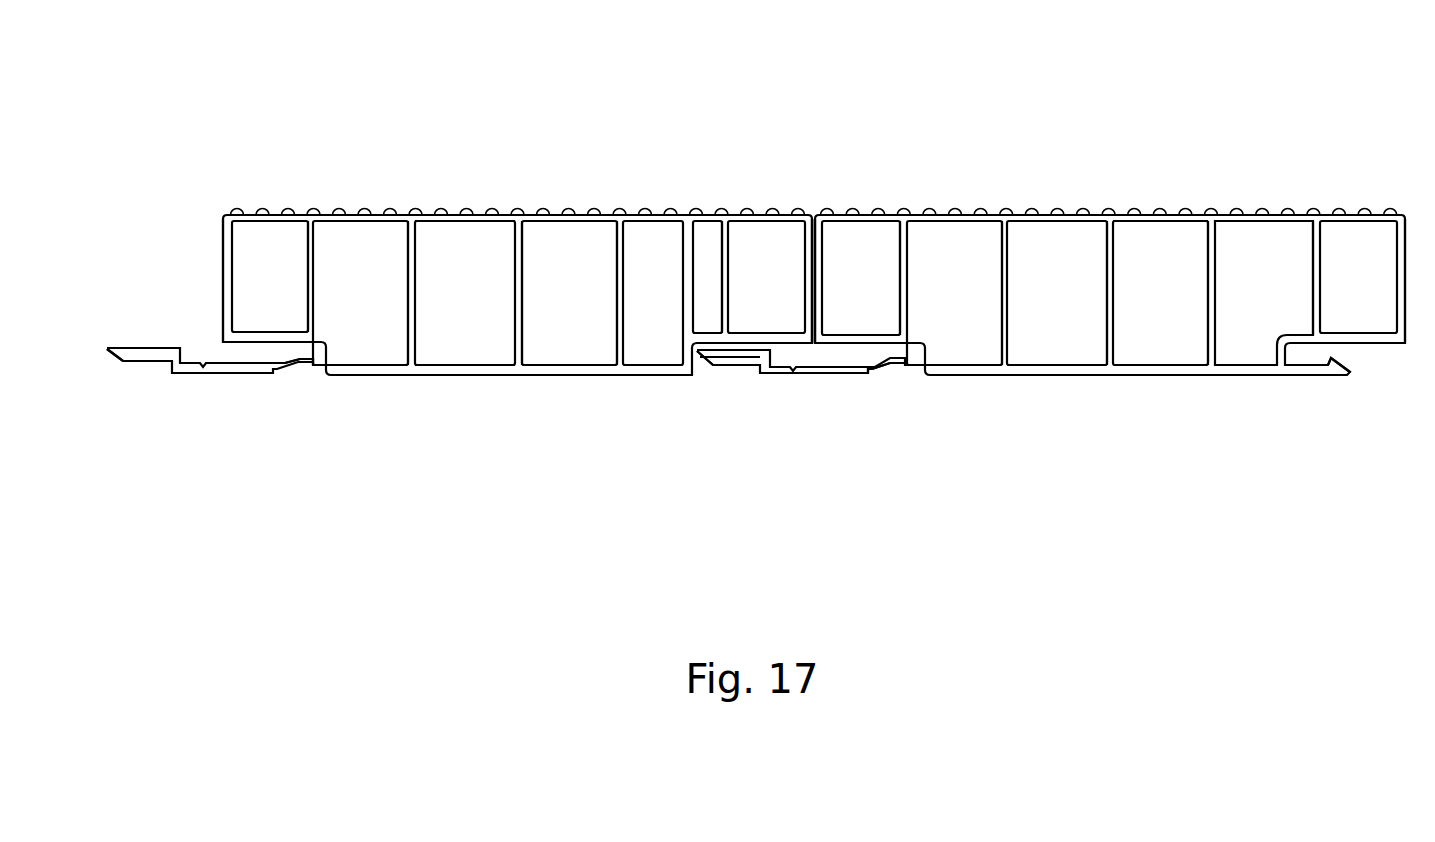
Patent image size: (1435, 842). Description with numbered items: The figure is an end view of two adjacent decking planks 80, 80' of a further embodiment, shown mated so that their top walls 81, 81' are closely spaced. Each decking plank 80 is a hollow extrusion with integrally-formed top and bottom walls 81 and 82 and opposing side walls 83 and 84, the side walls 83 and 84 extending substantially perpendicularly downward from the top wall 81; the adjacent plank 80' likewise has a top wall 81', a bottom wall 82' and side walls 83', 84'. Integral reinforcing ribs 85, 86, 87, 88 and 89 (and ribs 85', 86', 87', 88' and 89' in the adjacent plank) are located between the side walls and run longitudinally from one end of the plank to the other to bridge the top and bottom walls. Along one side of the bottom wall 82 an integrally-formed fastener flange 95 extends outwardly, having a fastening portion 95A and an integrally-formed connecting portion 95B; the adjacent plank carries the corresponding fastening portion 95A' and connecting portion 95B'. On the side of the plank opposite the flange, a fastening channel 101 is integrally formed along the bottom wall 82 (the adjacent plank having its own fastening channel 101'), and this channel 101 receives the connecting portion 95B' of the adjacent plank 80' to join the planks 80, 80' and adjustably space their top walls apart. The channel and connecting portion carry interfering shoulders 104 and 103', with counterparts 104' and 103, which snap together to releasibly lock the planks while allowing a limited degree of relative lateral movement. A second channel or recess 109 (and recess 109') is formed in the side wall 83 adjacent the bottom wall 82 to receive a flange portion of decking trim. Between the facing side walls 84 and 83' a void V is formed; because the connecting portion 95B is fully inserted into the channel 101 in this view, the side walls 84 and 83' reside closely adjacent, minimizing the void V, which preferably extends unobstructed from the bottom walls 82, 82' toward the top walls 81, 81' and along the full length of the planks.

The decking plank 80 is at (500, 245).
The adjacent decking plank 80' is at (1115, 256).
The top wall 81 is at (465, 187).
The top wall 81' is at (1166, 179).
The bottom wall 82 is at (465, 394).
The bottom wall 82' is at (1261, 418).
The side wall 83 is at (203, 267).
The side wall 83' is at (851, 240).
The side wall 84 is at (804, 244).
The side wall 84' is at (1396, 235).
The reinforcing rib 85 is at (273, 238).
The reinforcing rib 85' is at (929, 234).
The reinforcing rib 86 is at (388, 253).
The reinforcing rib 86' is at (1014, 249).
The reinforcing rib 87 is at (545, 321).
The reinforcing rib 87' is at (1110, 335).
The reinforcing rib 88 is at (621, 254).
The reinforcing rib 88' is at (1205, 334).
The reinforcing rib 89 is at (715, 239).
The reinforcing rib 89' is at (1303, 238).
The fastener flange 95 is at (238, 348).
The fastening portion 95A is at (222, 413).
The fastening portion 95A' is at (913, 412).
The connecting portion 95B is at (164, 407).
The connecting portion 95B' is at (723, 431).
The fastening channel 101 is at (717, 384).
The fastening channel 101' is at (1346, 409).
The interfering shoulder 103 is at (141, 400).
The interfering shoulder 103' is at (695, 430).
The interfering shoulder 104 is at (745, 405).
The interfering shoulder 104' is at (1371, 378).
The second channel or recess 109 is at (330, 402).
The second channel or recess 109' is at (944, 427).
The void V is at (823, 378).